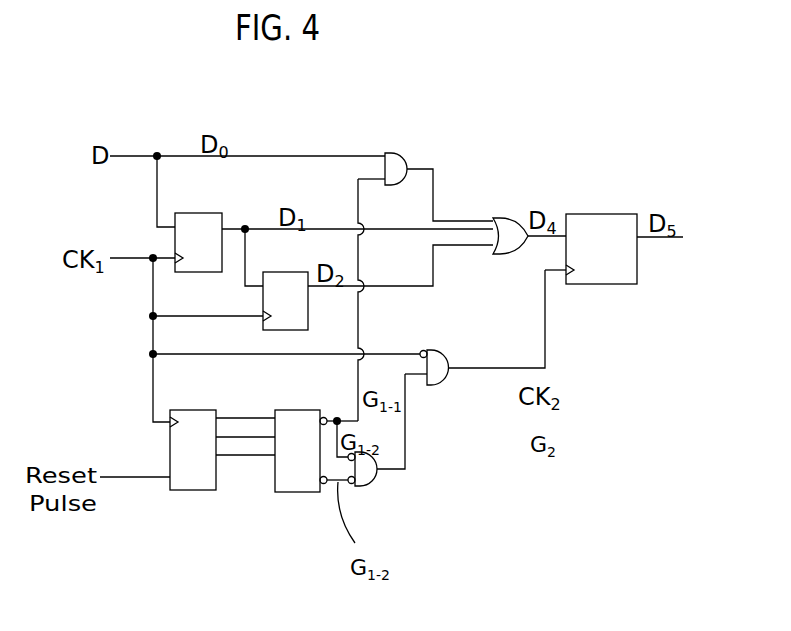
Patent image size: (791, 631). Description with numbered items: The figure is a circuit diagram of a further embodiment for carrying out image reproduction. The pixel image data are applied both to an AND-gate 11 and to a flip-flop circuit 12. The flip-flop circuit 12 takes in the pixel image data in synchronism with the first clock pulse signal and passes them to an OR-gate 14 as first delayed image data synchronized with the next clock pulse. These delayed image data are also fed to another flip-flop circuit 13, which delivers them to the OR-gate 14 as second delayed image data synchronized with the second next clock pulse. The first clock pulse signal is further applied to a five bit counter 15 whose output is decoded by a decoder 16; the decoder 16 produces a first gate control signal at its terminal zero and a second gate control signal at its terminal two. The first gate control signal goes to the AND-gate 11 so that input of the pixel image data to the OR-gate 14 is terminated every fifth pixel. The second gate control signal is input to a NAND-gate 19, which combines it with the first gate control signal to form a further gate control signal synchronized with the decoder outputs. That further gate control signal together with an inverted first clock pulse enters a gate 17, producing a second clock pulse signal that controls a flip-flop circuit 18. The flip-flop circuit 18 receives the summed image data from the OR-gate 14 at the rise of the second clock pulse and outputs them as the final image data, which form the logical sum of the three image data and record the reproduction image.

The AND-gate 11 is at (398, 153).
The flip-flop circuit 12 is at (198, 213).
The flip-flop circuit 13 is at (303, 322).
The OR-gate 14 is at (505, 218).
The five bit counter 15 is at (202, 490).
The decoder 16 is at (316, 492).
The gate 17 is at (436, 385).
The flip-flop circuit 18 is at (612, 284).
The NAND-gate 19 is at (365, 486).